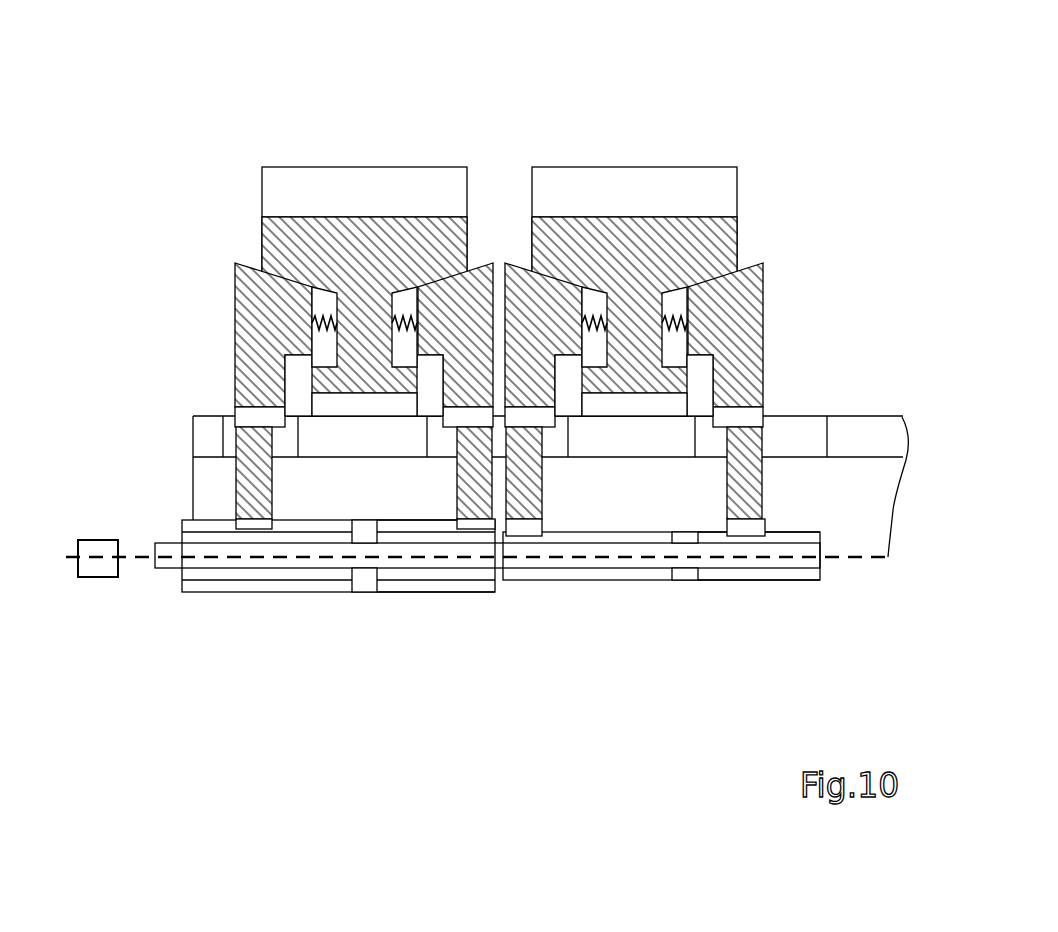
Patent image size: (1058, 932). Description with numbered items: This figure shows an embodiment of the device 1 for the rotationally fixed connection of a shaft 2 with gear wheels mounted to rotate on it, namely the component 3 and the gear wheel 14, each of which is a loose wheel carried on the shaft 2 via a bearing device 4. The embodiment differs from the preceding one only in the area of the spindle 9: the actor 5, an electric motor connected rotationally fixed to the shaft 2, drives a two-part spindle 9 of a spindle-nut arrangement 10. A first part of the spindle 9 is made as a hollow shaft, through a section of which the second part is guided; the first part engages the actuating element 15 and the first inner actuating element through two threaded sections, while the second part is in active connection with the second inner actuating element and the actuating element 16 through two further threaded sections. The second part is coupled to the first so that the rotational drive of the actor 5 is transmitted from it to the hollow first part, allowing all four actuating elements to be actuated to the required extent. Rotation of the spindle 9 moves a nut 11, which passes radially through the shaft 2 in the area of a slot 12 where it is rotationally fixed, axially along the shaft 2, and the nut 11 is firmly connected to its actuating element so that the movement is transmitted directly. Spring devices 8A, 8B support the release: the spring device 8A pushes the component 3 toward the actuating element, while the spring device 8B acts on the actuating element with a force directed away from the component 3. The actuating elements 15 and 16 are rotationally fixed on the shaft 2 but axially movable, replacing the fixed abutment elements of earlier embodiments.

The device 1 is at (406, 88).
The shaft 2 is at (205, 427).
The component 3 is at (290, 178).
The bearing device 4 is at (336, 433).
The actor 5 is at (107, 547).
The spring device 8A is at (319, 330).
The spring device 8B is at (470, 467).
The spindle 9 is at (628, 594).
The spindle-nut arrangement 10 is at (472, 542).
The nut 11 is at (470, 453).
The slot 12 is at (553, 443).
The gear wheel 14 is at (578, 197).
The actuating element 15 is at (263, 323).
The actuating element 16 is at (747, 287).